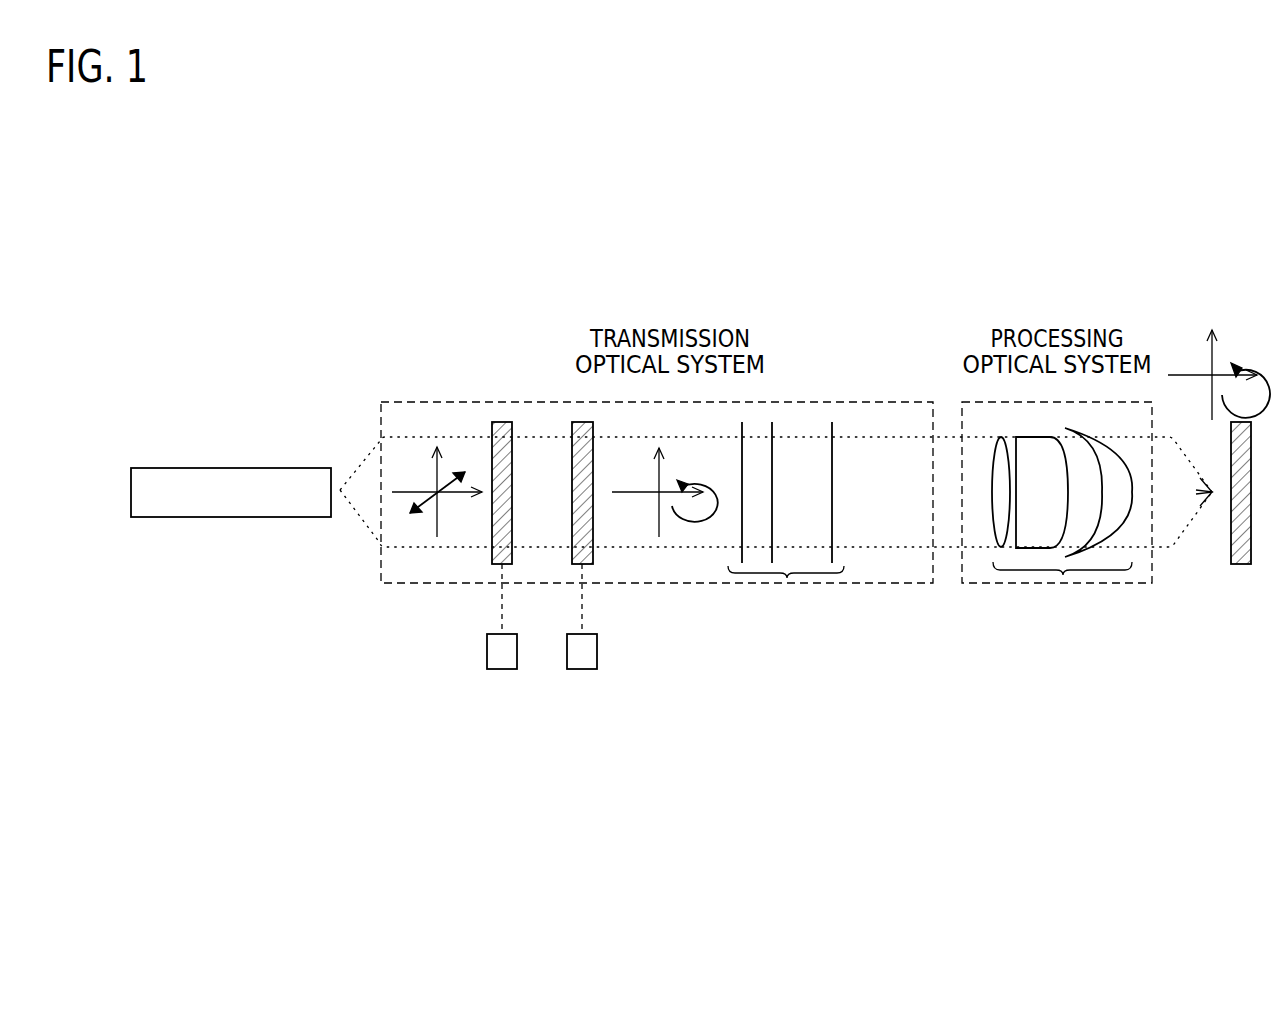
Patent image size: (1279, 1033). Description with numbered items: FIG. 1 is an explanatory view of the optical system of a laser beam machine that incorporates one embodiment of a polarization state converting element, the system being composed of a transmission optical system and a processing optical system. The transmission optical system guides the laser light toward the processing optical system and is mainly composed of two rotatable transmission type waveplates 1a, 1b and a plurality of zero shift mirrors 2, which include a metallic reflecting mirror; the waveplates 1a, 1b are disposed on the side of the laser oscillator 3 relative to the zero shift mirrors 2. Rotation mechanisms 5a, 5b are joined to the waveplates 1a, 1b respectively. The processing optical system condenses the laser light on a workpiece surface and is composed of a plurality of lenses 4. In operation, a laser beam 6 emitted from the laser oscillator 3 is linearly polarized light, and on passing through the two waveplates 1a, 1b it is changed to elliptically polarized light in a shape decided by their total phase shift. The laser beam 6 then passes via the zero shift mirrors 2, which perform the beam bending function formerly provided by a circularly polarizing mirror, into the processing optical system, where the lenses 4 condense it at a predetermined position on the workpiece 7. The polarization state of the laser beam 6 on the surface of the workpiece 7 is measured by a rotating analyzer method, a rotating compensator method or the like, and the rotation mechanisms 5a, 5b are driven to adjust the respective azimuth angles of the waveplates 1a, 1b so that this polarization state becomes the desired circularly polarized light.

The waveplate 1a is at (502, 422).
The waveplate 1b is at (582, 422).
The zero shift mirrors 2 is at (787, 578).
The laser oscillator 3 is at (235, 478).
The lenses 4 is at (1063, 575).
The rotation mechanism 5a is at (502, 660).
The rotation mechanism 5b is at (582, 660).
The laser beam 6 is at (378, 447).
The workpiece 7 is at (1243, 558).